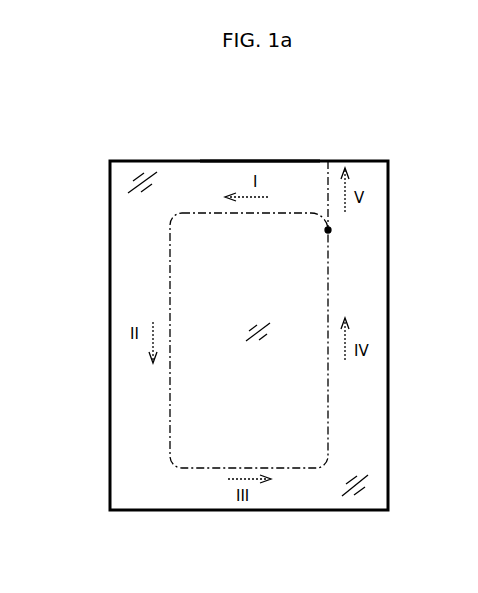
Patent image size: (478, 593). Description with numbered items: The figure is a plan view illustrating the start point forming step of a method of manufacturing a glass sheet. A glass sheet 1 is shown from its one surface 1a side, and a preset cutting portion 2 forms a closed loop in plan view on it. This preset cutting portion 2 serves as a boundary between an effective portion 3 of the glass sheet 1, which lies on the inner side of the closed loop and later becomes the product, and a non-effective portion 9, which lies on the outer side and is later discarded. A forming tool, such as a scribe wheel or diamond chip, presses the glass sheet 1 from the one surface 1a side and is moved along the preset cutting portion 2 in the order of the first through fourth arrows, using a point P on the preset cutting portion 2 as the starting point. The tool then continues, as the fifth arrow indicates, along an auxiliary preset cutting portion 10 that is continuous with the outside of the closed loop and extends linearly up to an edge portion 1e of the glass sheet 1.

The glass sheet 1 is at (76, 170).
The one surface 1a is at (195, 181).
The edge portion 1e is at (281, 160).
The preset cutting portion 2 is at (170, 425).
The effective portion 3 is at (298, 438).
The non-effective portion 9 is at (363, 283).
The auxiliary preset cutting portion 10 is at (328, 181).
The point P is at (331, 230).